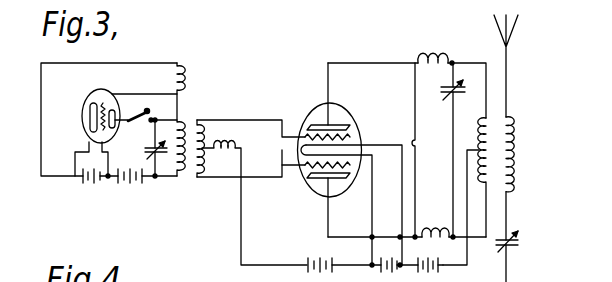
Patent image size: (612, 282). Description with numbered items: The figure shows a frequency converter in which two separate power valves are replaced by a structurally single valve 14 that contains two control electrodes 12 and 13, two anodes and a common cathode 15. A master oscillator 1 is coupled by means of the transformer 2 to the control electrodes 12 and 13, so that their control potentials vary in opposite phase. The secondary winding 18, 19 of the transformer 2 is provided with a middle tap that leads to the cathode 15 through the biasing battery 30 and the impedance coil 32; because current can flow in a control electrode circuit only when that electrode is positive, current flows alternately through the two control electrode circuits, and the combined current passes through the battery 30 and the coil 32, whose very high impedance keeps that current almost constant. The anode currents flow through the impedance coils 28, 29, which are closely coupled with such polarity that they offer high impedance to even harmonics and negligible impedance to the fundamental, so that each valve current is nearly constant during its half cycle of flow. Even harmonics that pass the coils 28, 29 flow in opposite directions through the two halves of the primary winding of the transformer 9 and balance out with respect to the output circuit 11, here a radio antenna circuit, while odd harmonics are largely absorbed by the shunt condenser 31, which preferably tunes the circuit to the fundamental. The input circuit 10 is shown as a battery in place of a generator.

The master oscillator 1 is at (84, 104).
The transformer 2 is at (198, 180).
The transformer 9 is at (488, 112).
The input circuit 10 is at (447, 272).
The output circuit 11 is at (513, 204).
The control electrode 12 is at (350, 137).
The control electrode 13 is at (350, 165).
The valve 14 is at (352, 109).
The cathode 15 is at (300, 150).
The secondary winding 18 is at (204, 131).
The secondary winding 19 is at (204, 167).
The impedance coil 28 is at (436, 58).
The impedance coil 29 is at (431, 232).
The biasing battery 30 is at (318, 256).
The shunt condenser 31 is at (444, 94).
The impedance coil 32 is at (236, 147).